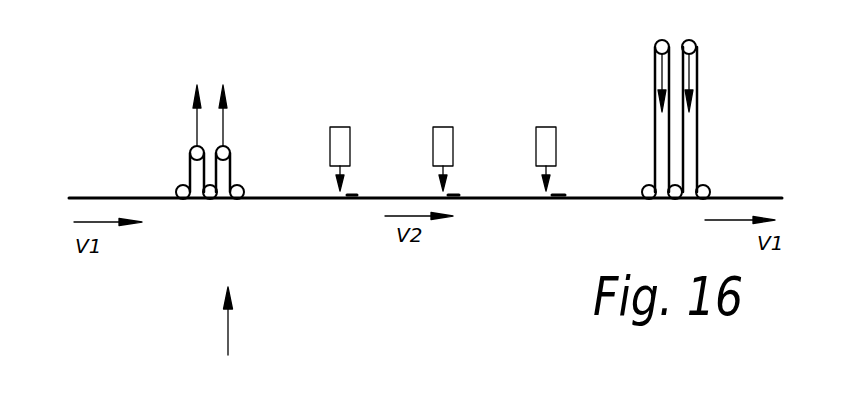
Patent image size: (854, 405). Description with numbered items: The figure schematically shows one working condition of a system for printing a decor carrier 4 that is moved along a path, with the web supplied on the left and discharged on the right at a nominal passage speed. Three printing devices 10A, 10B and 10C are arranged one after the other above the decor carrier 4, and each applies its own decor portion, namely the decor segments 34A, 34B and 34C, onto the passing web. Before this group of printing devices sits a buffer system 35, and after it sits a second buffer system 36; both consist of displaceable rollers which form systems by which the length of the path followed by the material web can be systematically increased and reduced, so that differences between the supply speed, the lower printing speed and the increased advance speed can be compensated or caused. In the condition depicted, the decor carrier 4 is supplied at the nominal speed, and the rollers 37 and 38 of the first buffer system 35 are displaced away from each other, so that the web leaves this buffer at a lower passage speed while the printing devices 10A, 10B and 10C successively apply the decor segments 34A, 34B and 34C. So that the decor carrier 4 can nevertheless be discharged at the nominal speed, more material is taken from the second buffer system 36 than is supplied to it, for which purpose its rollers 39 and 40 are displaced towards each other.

The decor carrier 4 is at (113, 197).
The buffer system 35 is at (226, 154).
The roller 38 is at (218, 148).
The roller 37 is at (237, 199).
The printing device 10C is at (342, 135).
The printing device 10B is at (446, 134).
The printing device 10A is at (547, 133).
The decor segment 34C is at (357, 194).
The decor segment 34B is at (459, 194).
The decor segment 34A is at (565, 194).
The buffer system 36 is at (681, 126).
The roller 40 is at (694, 39).
The roller 39 is at (703, 199).